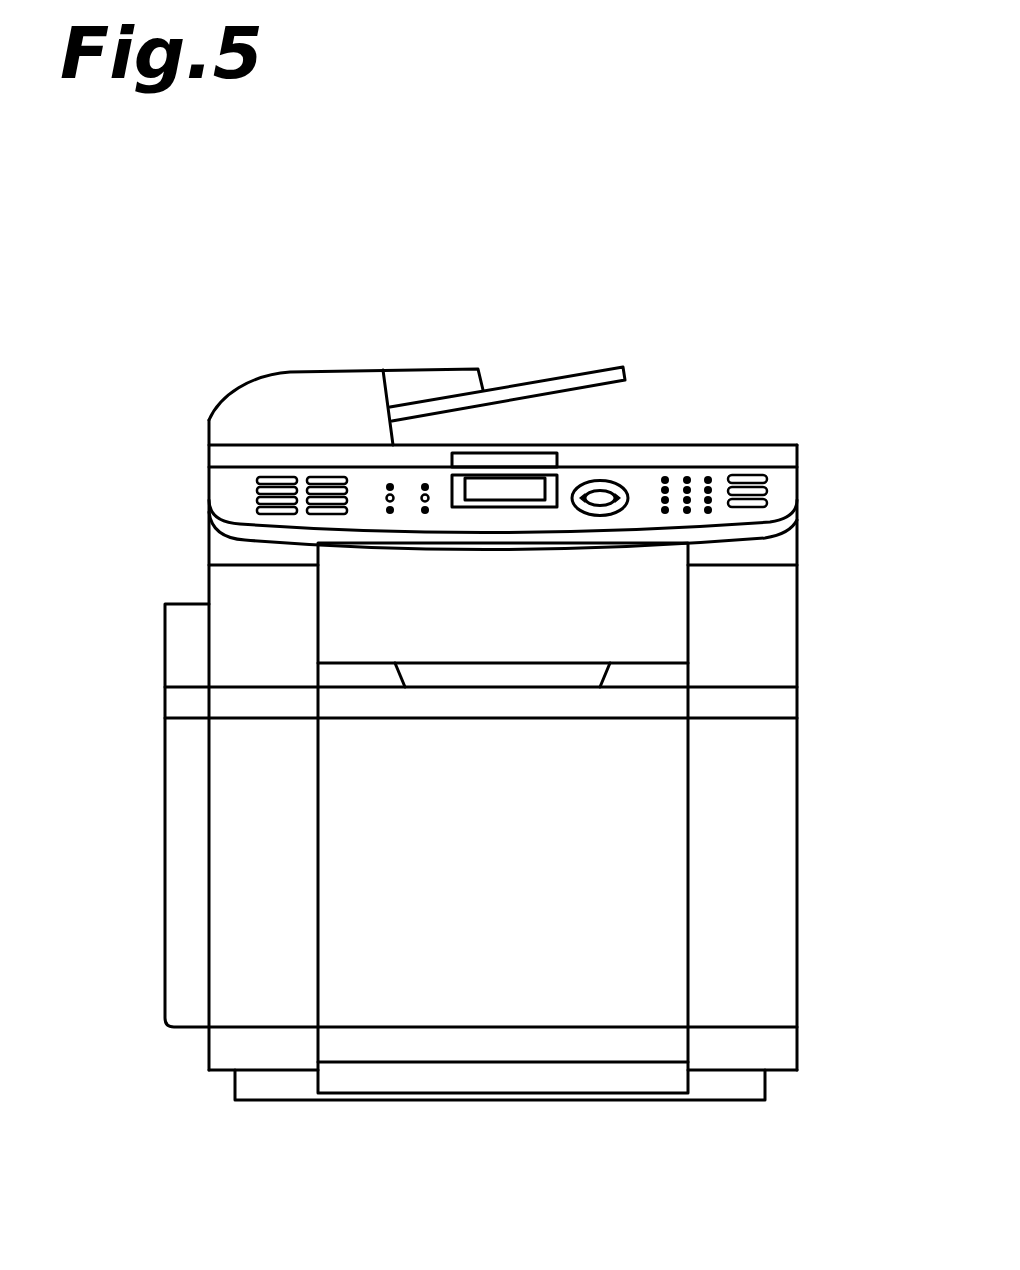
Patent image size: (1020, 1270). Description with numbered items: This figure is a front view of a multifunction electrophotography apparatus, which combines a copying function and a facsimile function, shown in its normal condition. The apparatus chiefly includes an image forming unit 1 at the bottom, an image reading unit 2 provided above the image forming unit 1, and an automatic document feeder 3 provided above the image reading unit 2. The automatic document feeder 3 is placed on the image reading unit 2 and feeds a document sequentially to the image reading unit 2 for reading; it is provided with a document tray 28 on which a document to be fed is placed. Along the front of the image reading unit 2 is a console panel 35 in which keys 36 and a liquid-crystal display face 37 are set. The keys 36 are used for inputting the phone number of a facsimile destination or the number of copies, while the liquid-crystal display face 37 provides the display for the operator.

The image forming unit 1 is at (775, 777).
The image reading unit 2 is at (223, 490).
The automatic document feeder 3 is at (278, 403).
The document tray 28 is at (543, 375).
The console panel 35 is at (642, 477).
The keys 36 is at (277, 478).
The liquid-crystal display face 37 is at (513, 480).